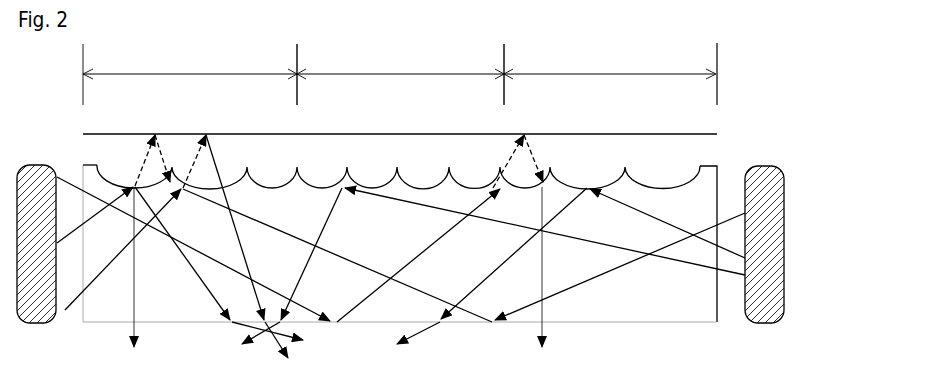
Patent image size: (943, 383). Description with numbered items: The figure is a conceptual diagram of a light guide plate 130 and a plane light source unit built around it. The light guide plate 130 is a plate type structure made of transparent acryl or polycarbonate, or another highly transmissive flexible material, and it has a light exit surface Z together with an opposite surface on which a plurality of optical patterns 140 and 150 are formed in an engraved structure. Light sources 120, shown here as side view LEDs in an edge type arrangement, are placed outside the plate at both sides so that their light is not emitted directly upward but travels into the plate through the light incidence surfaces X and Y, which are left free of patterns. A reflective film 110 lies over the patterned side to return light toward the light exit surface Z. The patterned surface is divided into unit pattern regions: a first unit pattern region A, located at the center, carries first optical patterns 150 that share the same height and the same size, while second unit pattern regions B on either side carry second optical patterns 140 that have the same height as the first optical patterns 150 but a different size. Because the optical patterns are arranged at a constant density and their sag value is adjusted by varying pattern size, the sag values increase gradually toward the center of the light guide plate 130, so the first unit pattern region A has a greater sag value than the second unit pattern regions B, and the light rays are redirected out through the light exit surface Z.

The reflective film 110 is at (717, 133).
The light source 120 is at (786, 241).
The light guide plate 130 is at (665, 314).
The second optical patterns 140 is at (661, 188).
The first optical patterns 150 is at (465, 187).
The light incidence surface X is at (81, 311).
The light incidence surface Y is at (722, 311).
The light exit surface Z is at (367, 322).
The first unit pattern region A is at (400, 74).
The second unit pattern region B is at (400, 74).